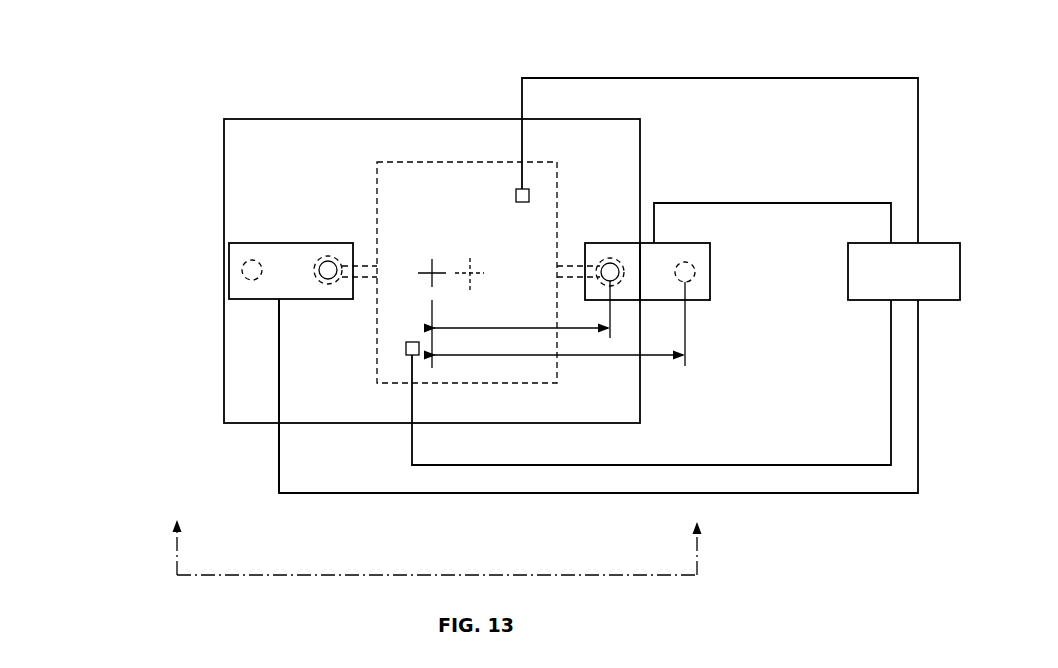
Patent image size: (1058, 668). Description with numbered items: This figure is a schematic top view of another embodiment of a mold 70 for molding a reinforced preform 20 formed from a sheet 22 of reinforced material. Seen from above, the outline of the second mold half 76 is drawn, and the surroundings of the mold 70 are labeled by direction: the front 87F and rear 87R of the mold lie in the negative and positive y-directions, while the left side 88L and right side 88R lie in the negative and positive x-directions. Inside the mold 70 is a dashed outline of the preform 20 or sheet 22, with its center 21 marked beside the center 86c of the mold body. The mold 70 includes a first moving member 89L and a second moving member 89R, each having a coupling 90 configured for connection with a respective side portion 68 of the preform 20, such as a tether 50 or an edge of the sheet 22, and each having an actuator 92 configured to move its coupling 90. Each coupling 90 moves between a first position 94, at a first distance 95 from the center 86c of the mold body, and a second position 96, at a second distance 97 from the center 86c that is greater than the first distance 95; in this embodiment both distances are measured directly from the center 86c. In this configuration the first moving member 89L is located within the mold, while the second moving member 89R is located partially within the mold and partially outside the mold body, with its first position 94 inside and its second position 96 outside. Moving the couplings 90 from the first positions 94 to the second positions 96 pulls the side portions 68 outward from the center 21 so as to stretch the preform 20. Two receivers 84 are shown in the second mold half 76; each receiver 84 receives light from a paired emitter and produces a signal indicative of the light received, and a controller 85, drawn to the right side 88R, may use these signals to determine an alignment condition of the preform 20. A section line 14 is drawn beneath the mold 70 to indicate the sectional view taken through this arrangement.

The mold 70 is at (126, 78).
The second mold half 76 is at (285, 172).
The reinforced preform 20 is at (411, 230).
The sheet 22 is at (408, 160).
The tether 50 is at (372, 266).
The receiver 84 is at (530, 196).
The controller 85 is at (919, 284).
The center of the mold body 86c is at (430, 270).
The center of the preform 21 is at (470, 270).
The side portion 68 is at (326, 284).
The coupling 90 is at (228, 243).
The first position 94 is at (326, 266).
The second position 96 is at (244, 268).
The actuator 92 is at (258, 300).
The first distance 95 is at (472, 324).
The second distance 97 is at (565, 358).
The rear direction 87R is at (462, 101).
The front direction 87F is at (361, 449).
The left side 88L is at (84, 295).
The right side 88R is at (794, 169).
The first moving member 89L is at (207, 228).
The second moving member 89R is at (720, 279).
The section line 14 is at (436, 537).